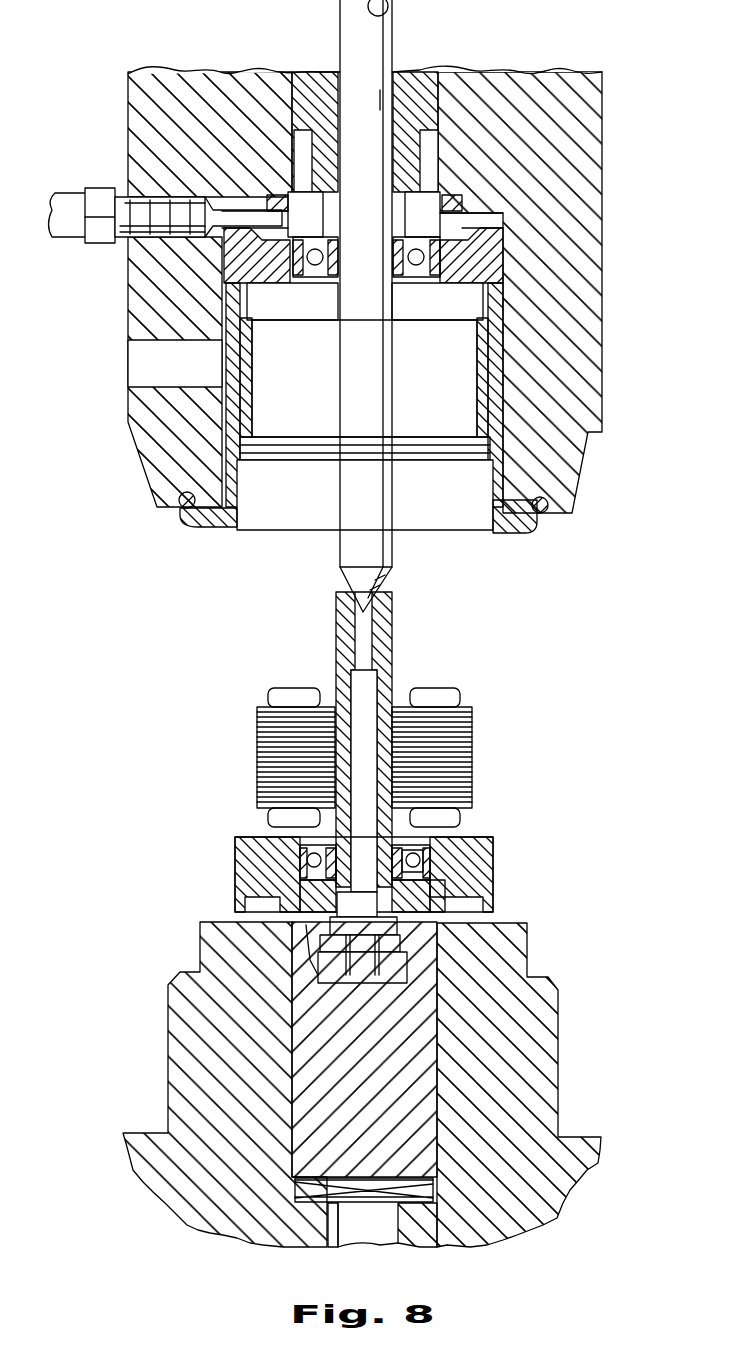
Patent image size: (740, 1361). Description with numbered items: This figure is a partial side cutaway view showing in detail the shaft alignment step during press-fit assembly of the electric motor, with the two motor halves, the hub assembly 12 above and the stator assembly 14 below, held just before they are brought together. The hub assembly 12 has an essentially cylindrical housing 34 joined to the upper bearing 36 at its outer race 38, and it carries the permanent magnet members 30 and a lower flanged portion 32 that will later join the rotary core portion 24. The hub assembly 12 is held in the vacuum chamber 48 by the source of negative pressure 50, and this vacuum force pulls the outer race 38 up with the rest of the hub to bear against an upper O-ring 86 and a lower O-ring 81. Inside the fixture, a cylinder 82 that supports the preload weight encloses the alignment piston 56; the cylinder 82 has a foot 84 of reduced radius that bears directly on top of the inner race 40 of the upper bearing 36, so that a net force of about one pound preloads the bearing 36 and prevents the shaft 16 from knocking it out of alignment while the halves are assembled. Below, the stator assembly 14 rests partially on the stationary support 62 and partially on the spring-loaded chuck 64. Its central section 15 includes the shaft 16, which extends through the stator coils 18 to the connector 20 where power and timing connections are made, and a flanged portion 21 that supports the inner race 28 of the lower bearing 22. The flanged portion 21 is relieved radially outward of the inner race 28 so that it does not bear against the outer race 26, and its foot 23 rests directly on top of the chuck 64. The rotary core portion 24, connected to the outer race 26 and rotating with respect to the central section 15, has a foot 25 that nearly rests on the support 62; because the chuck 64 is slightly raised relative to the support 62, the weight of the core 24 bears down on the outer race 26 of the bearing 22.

The hub assembly 12 is at (490, 257).
The stator assembly 14 is at (470, 760).
The central section 15 is at (340, 675).
The central shaft 16 is at (392, 648).
The stator coils 18 is at (258, 760).
The connector 20 is at (400, 962).
The flanged portion 21 is at (262, 855).
The lower bearing 22 is at (430, 850).
The foot 23 is at (307, 935).
The core portion 24 is at (235, 858).
The foot 25 is at (240, 878).
The outer race 26 is at (420, 868).
The inner race 28 is at (433, 897).
The permanent magnet members 30 is at (252, 365).
The lower flanged portion 32 is at (240, 514).
The cylindrical housing 34 is at (257, 263).
The upper bearing 36 is at (423, 288).
The outer race 38 is at (310, 277).
The inner race 40 is at (383, 255).
The vacuum chamber 48 is at (467, 303).
The source of negative pressure 50 is at (108, 186).
The alignment piston 56 is at (393, 545).
The stationary support 62 is at (523, 1043).
The spring-loaded chuck 64 is at (422, 962).
The lower O-ring 81 is at (183, 507).
The cylinder 82 is at (410, 70).
The foot 84 is at (390, 205).
The upper O-ring 86 is at (300, 130).